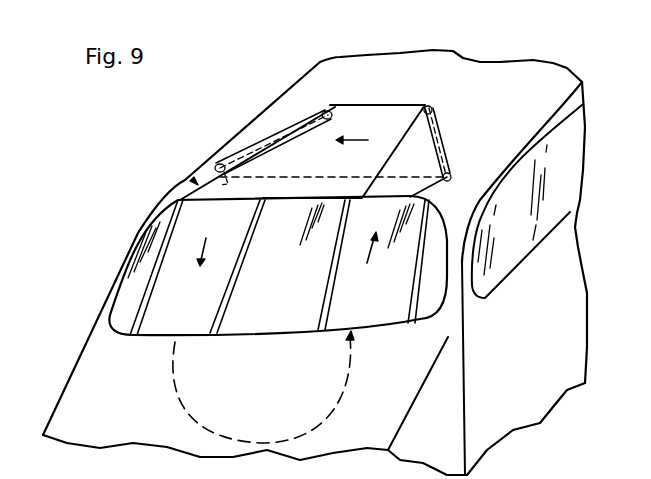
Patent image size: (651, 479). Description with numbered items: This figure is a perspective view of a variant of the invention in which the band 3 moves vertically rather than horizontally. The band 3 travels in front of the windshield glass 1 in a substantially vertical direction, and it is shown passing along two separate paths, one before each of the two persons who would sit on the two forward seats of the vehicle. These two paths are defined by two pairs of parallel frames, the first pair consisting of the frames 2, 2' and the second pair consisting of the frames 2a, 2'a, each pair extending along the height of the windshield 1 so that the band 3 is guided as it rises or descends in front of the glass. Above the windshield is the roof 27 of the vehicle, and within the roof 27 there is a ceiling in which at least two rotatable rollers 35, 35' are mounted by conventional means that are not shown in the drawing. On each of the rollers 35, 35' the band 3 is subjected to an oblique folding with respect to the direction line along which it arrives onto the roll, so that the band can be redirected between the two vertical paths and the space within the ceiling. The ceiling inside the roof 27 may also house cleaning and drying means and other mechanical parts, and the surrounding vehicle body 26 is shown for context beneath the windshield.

The glass 1 is at (277, 318).
The frame 2 is at (132, 267).
The frame 2' is at (248, 266).
The frame 2'a is at (316, 265).
The frame 2a is at (417, 285).
The band 3 is at (372, 118).
The vehicle body front 26 is at (117, 367).
The roof 27 is at (482, 82).
The rotatable roller 35 is at (273, 137).
The rotatable roller 35' is at (359, 151).